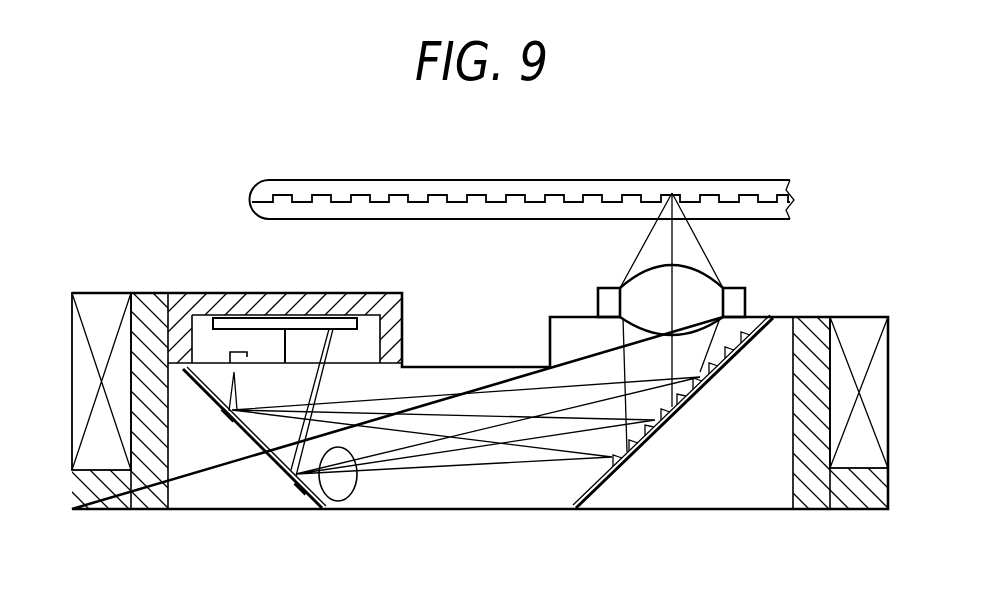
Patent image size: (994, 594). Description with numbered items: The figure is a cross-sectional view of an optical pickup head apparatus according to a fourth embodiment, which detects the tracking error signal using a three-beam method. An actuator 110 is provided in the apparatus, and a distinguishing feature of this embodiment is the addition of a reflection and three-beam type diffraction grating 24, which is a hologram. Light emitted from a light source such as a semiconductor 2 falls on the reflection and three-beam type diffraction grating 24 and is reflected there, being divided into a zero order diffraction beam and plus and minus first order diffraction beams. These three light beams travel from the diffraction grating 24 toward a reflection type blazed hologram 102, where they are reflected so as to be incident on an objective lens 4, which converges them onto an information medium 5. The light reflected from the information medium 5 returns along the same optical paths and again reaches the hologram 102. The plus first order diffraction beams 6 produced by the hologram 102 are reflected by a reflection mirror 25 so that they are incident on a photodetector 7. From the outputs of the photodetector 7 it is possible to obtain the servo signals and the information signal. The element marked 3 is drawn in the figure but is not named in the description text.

The semiconductor 2 is at (242, 360).
The light receiving element 3 is at (224, 380).
The objective lens 4 is at (730, 305).
The information medium 5 is at (592, 184).
The +1st order diffraction beams 6 is at (348, 496).
The photodetector 7 is at (348, 315).
The reflection and 3-beam type diffraction grating 24 is at (226, 420).
The reflection mirror 25 is at (302, 488).
The reflection type blazed hologram 102 is at (598, 497).
The actuator 110 is at (95, 302).